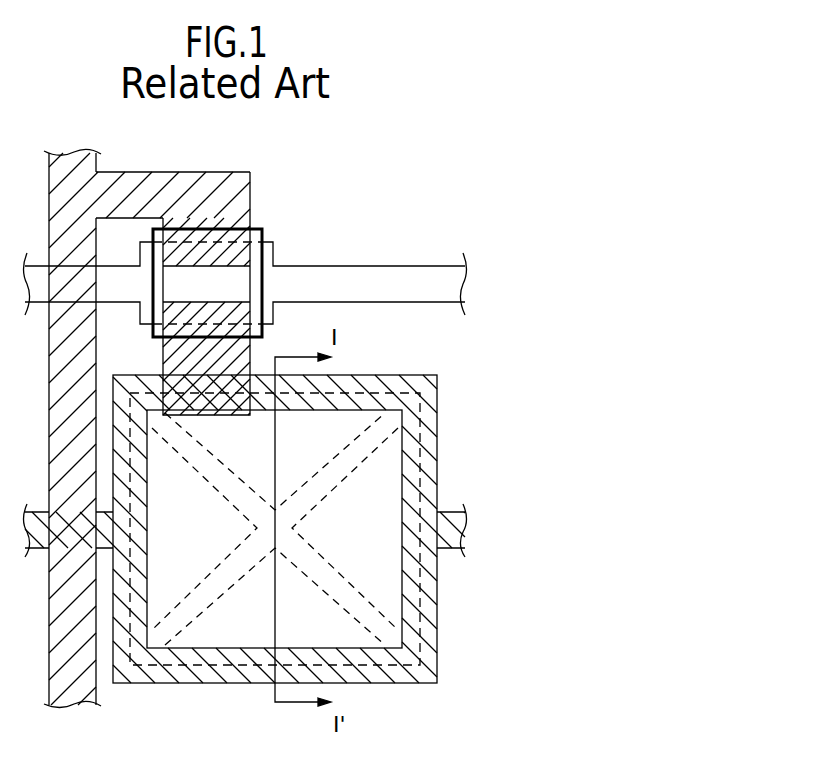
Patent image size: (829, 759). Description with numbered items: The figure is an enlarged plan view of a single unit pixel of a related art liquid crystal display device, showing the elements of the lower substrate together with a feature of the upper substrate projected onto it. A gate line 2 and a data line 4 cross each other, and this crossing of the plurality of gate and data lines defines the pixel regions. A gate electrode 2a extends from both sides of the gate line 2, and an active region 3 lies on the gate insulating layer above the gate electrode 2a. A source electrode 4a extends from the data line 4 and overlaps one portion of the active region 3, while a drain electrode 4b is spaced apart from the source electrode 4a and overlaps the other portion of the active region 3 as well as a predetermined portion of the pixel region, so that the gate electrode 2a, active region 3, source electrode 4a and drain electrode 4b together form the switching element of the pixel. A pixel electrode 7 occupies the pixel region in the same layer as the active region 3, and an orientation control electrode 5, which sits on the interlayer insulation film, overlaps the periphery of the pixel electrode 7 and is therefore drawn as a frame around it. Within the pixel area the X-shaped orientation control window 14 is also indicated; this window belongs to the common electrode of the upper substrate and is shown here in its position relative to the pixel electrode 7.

The gate line 2 is at (391, 273).
The gate electrode 2a is at (273, 252).
The active region 3 is at (250, 282).
The data line 4 is at (55, 417).
The source electrode 4a is at (240, 228).
The drain electrode 4b is at (242, 352).
The orientation control electrode 5 is at (405, 376).
The pixel electrode 7 is at (420, 413).
The orientation control window 14 is at (355, 460).